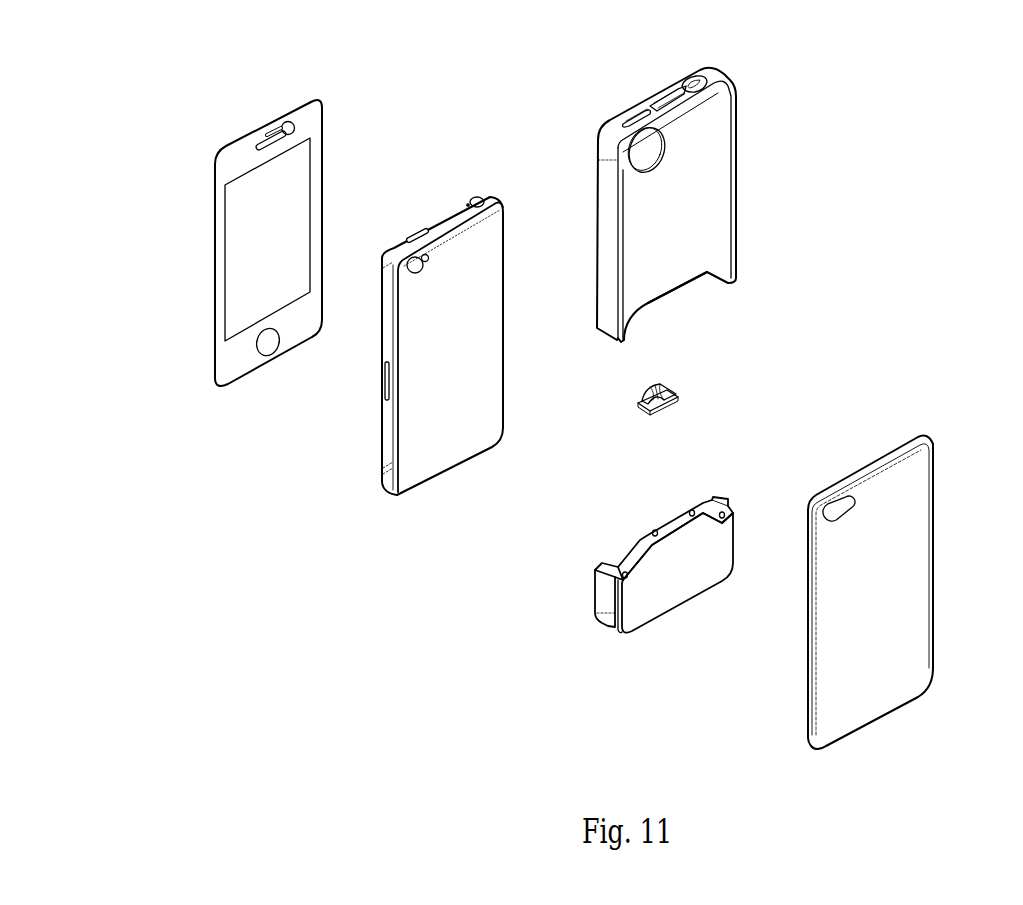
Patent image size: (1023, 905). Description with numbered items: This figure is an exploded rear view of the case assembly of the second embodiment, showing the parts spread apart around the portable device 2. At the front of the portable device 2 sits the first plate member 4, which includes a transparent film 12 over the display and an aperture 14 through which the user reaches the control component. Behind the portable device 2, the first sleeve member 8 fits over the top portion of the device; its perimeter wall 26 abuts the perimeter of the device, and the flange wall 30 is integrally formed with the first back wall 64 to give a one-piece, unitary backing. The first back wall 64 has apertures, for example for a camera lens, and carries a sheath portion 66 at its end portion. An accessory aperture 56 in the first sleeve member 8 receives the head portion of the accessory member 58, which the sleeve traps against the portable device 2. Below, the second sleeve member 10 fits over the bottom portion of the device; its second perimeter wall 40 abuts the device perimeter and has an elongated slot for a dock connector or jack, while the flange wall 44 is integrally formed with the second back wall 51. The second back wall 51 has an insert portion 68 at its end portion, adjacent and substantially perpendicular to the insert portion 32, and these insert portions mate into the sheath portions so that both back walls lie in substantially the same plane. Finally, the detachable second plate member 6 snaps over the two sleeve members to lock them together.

The portable device 2 is at (386, 445).
The first plate member 4 is at (232, 261).
The second plate member 6 is at (935, 516).
The first sleeve member 8 is at (660, 183).
The second sleeve member 10 is at (638, 582).
The transparent film 12 is at (255, 240).
The aperture 14 is at (264, 350).
The perimeter wall 26 is at (607, 252).
The flange wall 30 is at (620, 205).
The insert portion 32 is at (606, 567).
The second perimeter wall 40 is at (600, 591).
The flange wall 44 is at (619, 632).
The second back wall 51 is at (677, 565).
The accessory aperture 56 is at (662, 100).
The accessory member 58 is at (643, 390).
The first back wall 64 is at (710, 212).
The sheath portion 66 is at (678, 291).
The insert portion 68 is at (668, 530).